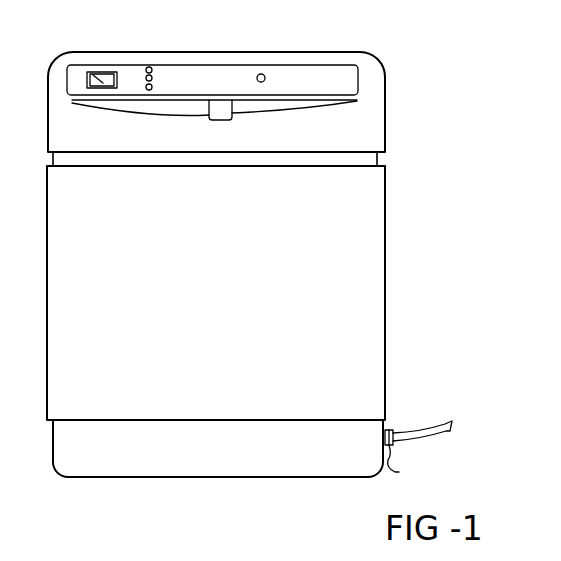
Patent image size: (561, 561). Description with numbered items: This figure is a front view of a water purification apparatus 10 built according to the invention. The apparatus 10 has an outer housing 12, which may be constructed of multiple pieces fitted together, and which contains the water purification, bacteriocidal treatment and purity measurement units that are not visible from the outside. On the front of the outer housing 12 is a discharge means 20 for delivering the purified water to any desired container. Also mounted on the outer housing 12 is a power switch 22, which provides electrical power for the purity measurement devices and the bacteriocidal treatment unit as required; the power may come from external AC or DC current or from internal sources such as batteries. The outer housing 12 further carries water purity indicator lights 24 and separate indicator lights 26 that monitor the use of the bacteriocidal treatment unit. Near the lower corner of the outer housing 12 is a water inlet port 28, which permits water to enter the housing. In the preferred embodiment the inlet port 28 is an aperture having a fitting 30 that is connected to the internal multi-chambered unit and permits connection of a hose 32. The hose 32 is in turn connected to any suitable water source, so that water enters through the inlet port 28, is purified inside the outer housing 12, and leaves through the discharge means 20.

The apparatus 10 is at (437, 48).
The outer housing 12 is at (386, 241).
The discharge means 20 is at (209, 118).
The power switch 22 is at (85, 71).
The water purity indicator lights 24 is at (152, 70).
The indicator lights 26 is at (264, 74).
The water inlet port 28 is at (390, 429).
The fitting 30 is at (404, 469).
The hose 32 is at (433, 428).